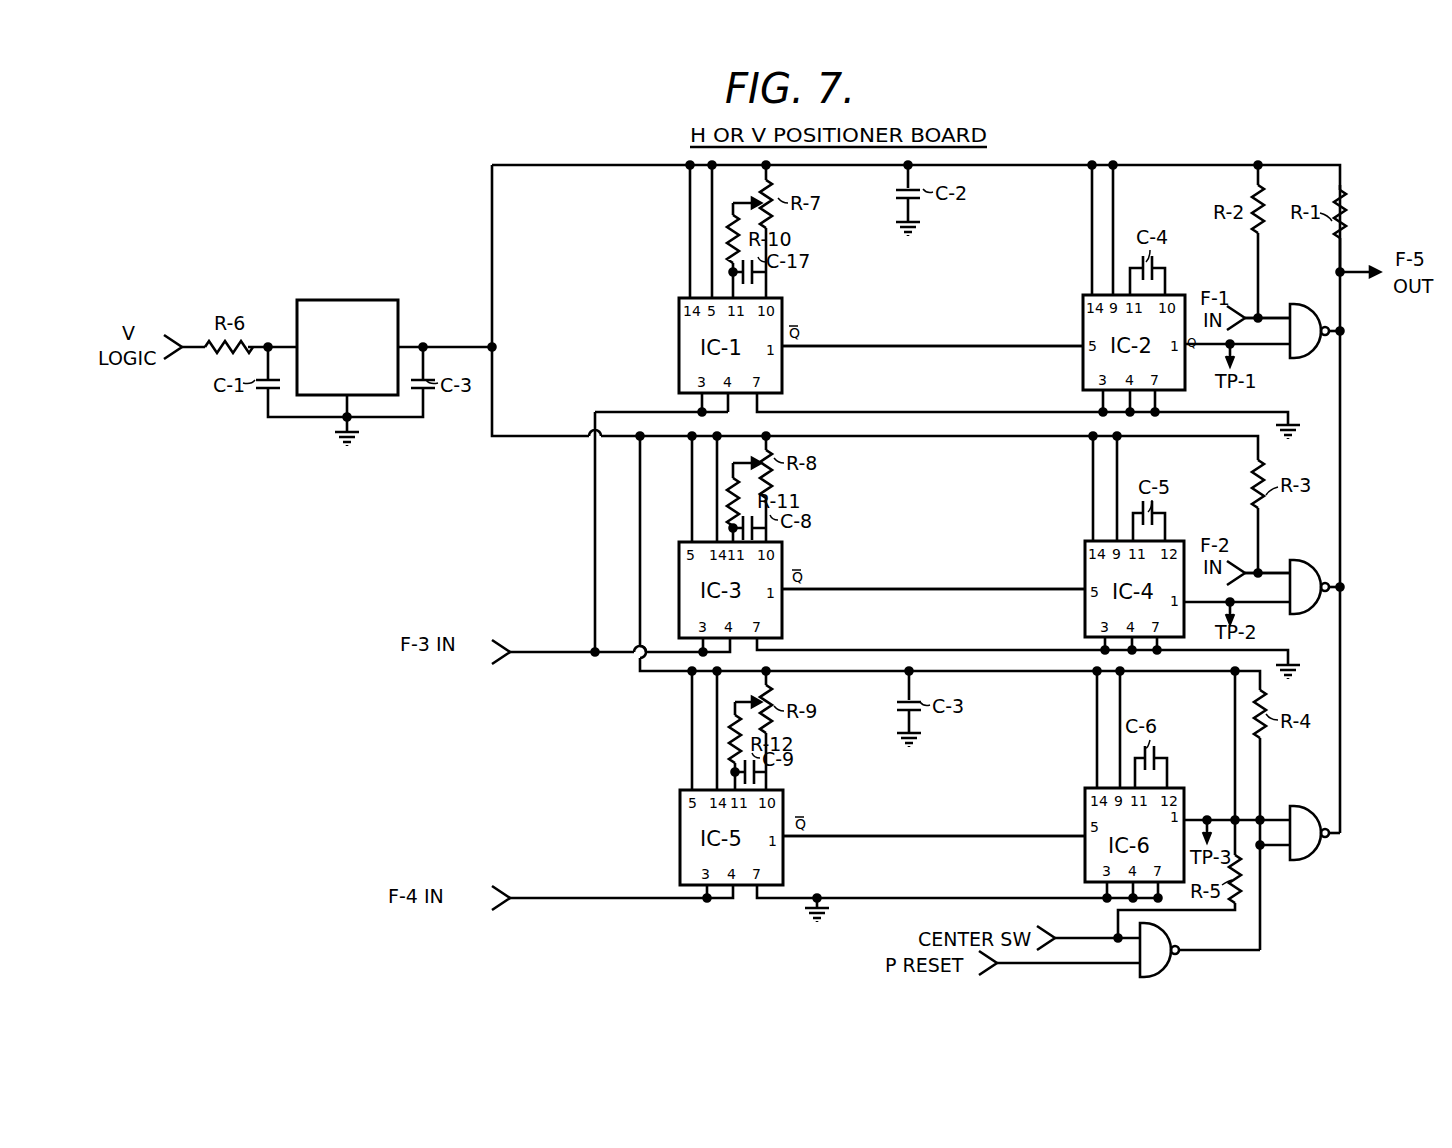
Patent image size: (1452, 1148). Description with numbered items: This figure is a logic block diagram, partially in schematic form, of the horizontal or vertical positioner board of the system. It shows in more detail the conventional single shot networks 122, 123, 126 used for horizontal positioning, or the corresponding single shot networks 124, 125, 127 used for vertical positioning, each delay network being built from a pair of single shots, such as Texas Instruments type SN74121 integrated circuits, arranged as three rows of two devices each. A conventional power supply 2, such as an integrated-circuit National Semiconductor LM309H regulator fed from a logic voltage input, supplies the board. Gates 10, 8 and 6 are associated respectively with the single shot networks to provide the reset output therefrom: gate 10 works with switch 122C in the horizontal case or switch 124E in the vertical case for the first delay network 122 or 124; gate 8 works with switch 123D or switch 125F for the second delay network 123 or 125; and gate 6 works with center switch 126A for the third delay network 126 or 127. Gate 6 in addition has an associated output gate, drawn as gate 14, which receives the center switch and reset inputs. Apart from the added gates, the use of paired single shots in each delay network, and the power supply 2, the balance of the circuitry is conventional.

The power supply 2 is at (399, 305).
The gate 10 is at (1300, 305).
The gate 8 is at (1304, 556).
The gate 6 is at (1308, 806).
The NAND gate 7D 14 is at (1167, 932).
The single shot delay network 122 is at (929, 327).
The single shot delay network 124 is at (932, 325).
The single shot delay network 123 is at (929, 578).
The single shot delay network 125 is at (933, 572).
The single shot delay network 126 is at (931, 836).
The single shot delay network 127 is at (934, 820).
The switch 122C is at (1245, 277).
The switch 124E is at (1254, 318).
The switch 123D is at (1244, 526).
The switch 125F is at (1254, 570).
The switch 126A is at (1084, 938).